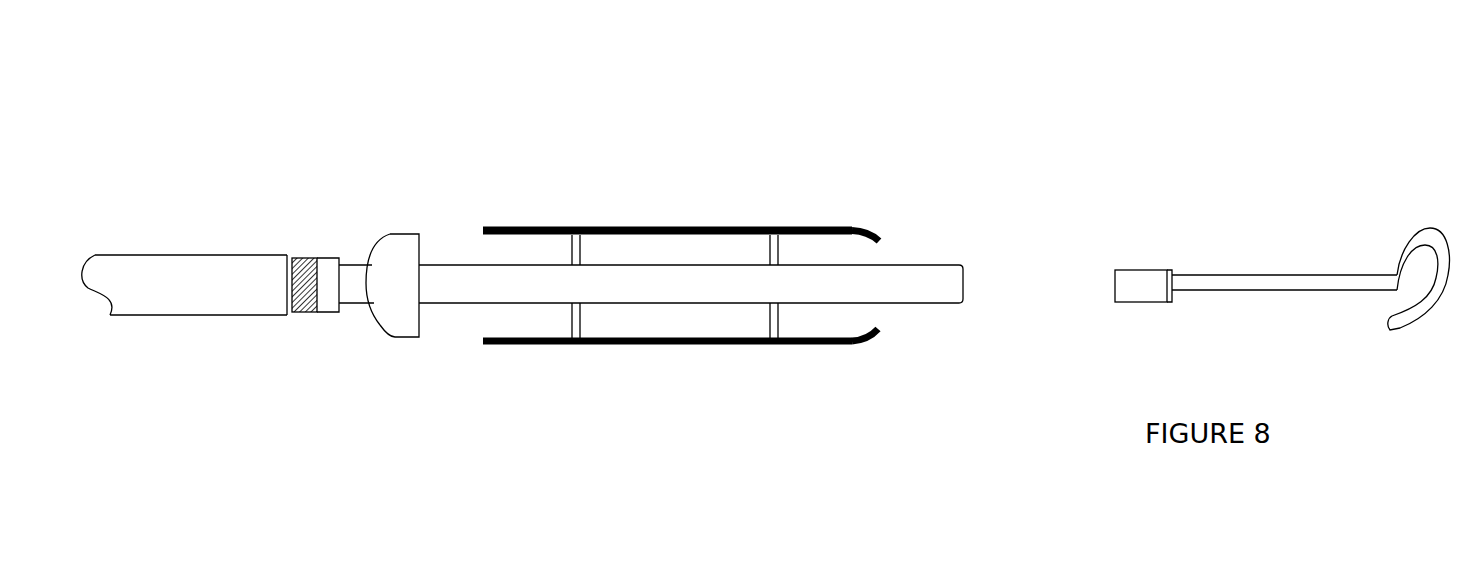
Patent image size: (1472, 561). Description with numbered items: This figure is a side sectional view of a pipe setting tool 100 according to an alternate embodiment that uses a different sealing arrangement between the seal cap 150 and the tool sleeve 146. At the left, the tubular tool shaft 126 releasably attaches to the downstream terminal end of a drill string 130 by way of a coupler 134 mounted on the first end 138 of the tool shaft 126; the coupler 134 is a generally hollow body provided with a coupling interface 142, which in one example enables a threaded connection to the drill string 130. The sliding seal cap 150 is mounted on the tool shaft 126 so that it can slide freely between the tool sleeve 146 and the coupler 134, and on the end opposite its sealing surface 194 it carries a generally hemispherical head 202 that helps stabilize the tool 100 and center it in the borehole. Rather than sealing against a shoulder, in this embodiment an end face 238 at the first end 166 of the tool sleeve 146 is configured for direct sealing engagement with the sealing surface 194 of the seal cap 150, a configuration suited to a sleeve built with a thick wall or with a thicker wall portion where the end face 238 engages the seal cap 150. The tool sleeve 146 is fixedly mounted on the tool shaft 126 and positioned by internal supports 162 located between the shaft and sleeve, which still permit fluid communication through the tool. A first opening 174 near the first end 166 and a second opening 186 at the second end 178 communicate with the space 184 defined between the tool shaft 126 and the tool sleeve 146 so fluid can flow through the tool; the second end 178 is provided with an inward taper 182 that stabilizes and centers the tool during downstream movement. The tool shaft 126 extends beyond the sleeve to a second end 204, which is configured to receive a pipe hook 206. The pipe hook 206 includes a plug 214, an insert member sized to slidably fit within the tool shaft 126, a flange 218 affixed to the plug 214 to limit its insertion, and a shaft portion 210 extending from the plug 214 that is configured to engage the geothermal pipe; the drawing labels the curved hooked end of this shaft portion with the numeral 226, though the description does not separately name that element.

The pipe setting tool 100 is at (682, 99).
The drill string 130 is at (135, 261).
The coupler 134 is at (304, 259).
The coupling interface 142 is at (291, 314).
The first end 138 is at (350, 297).
The seal cap 150 is at (396, 252).
The hemispherical head 202 is at (378, 303).
The sealing surface 194 is at (421, 246).
The tool shaft 126 is at (923, 291).
The second end 204 is at (943, 273).
The end face 238 is at (482, 229).
The tool sleeve 146 is at (668, 226).
The second end 178 is at (843, 227).
The second opening 186 is at (879, 253).
The internal supports 162 is at (582, 246).
The first opening 174 is at (477, 318).
The first end 166 is at (493, 346).
The space 184 is at (697, 321).
The inward taper 182 is at (873, 336).
The pipe hook 206 is at (1250, 173).
The plug 214 is at (1143, 293).
The flange 218 is at (1172, 269).
The shaft portion 210 is at (1293, 275).
The hook 226 is at (1428, 232).